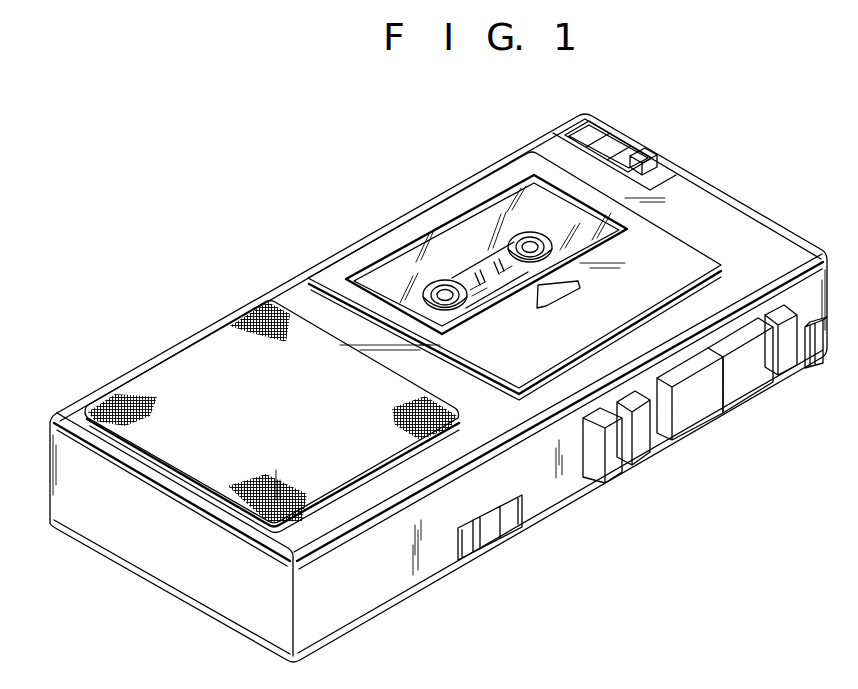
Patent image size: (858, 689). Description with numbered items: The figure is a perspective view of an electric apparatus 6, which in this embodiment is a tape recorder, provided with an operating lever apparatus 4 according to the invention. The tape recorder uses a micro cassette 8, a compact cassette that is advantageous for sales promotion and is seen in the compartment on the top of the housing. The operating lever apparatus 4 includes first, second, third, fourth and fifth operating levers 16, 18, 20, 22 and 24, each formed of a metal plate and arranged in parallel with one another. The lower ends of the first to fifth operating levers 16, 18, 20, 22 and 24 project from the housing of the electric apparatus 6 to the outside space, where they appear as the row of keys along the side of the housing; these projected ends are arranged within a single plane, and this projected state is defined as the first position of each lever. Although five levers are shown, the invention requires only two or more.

The operating lever apparatus 4 is at (727, 430).
The electric apparatus 6 is at (742, 218).
The micro cassette 8 is at (448, 237).
The first operating lever 16 is at (613, 483).
The second operating lever 18 is at (640, 462).
The third operating lever 20 is at (693, 423).
The fourth operating lever 22 is at (753, 388).
The fifth operating lever 24 is at (797, 375).